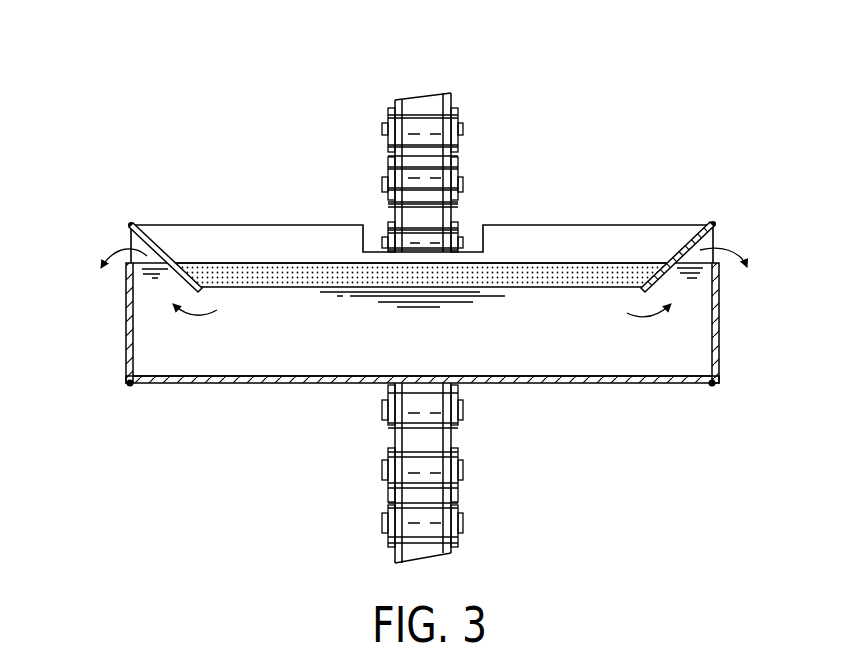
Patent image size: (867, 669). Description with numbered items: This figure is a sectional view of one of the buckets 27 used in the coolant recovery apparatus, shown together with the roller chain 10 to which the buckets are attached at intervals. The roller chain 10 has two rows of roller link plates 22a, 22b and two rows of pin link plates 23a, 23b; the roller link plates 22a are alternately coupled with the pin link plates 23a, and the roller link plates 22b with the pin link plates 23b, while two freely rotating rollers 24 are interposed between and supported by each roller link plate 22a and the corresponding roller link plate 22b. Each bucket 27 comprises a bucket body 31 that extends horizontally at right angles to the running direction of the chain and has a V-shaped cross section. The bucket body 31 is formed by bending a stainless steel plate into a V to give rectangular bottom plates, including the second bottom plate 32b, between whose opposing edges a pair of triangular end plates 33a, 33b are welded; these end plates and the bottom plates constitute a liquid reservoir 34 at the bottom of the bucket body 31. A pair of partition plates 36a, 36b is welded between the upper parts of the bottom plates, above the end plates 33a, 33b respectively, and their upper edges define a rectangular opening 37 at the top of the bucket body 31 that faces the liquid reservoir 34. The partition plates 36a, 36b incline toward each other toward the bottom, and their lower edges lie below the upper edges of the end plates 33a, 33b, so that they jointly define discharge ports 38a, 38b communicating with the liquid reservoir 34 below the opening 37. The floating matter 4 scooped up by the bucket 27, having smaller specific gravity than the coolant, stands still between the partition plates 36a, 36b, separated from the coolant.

The roller chain 10 is at (425, 286).
The roller link plate 22a is at (397, 132).
The roller link plate 22b is at (447, 115).
The pin link plate 23a is at (390, 495).
The pin link plate 23b is at (457, 497).
The roller 24 is at (432, 180).
The bucket 27 is at (690, 214).
The bucket body 31 is at (198, 385).
The second bottom plate 32b is at (615, 365).
The end plate 33a is at (125, 352).
The end plate 33b is at (718, 346).
The liquid reservoir 34 is at (337, 343).
The partition plate 36a is at (160, 250).
The partition plate 36b is at (678, 253).
The opening 37 is at (311, 236).
The discharge port 38a is at (122, 261).
The discharge port 38b is at (703, 253).
The floating matter 4 is at (541, 272).